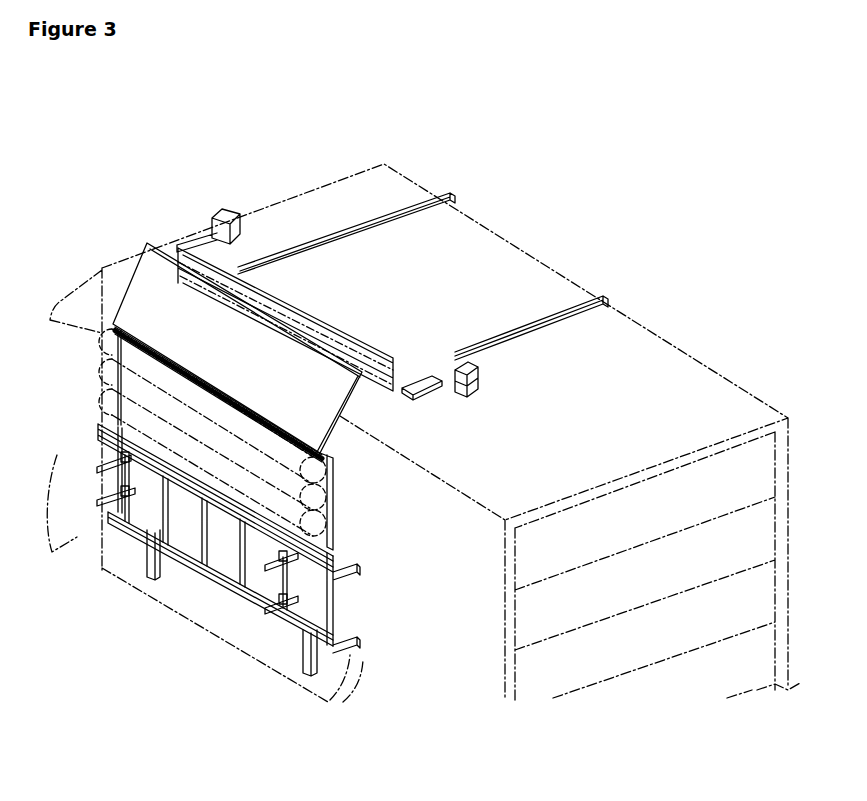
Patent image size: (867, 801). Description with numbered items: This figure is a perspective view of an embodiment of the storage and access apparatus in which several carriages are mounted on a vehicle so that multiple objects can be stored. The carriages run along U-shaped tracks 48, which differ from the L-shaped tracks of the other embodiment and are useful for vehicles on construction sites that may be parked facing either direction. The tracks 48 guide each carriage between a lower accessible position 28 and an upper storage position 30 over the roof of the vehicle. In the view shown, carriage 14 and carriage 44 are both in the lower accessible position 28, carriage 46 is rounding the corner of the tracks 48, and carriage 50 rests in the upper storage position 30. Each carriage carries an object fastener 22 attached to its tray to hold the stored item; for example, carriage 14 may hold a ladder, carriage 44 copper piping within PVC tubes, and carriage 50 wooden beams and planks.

The carriage 14 is at (346, 605).
The object fastener 22 is at (117, 498).
The lower accessible position 28 is at (213, 596).
The upper storage position 30 is at (463, 279).
The carriage 44 is at (345, 509).
The carriage 46 is at (345, 440).
The tracks 48 is at (433, 206).
The carriage 50 is at (404, 402).